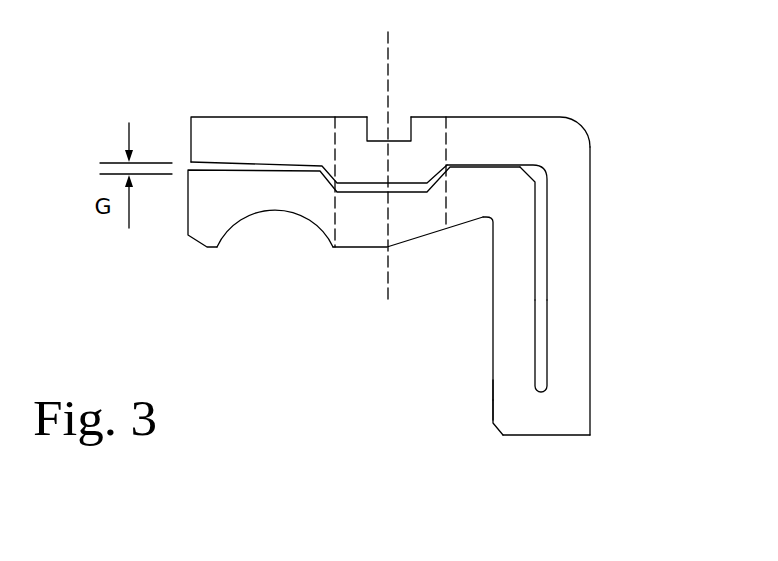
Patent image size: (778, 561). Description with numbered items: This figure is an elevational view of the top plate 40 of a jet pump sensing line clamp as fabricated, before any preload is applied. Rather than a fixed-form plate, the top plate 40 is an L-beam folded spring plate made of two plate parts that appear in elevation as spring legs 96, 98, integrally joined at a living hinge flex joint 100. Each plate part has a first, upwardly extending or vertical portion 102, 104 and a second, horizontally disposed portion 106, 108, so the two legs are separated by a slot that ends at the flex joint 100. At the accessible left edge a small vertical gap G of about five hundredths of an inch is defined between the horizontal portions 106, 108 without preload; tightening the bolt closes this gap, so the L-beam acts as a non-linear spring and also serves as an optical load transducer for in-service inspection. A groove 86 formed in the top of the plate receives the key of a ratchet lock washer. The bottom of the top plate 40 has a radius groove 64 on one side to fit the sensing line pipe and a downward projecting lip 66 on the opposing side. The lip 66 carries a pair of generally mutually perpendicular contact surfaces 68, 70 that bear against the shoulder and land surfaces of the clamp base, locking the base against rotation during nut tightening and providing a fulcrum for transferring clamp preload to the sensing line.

The top plate 40 is at (288, 304).
The radius groove 64 is at (240, 223).
The downward projecting lip 66 is at (458, 397).
The contact surface 68 is at (492, 403).
The contact surface 70 is at (547, 435).
The groove 86 is at (402, 140).
The spring leg 96 is at (444, 259).
The spring leg 98 is at (618, 118).
The living hinge flex joint 100 is at (543, 408).
The upwardly extending portion 102 is at (507, 298).
The upwardly extending portion 104 is at (572, 280).
The horizontally disposed portion 106 is at (208, 202).
The horizontally disposed portion 108 is at (265, 127).